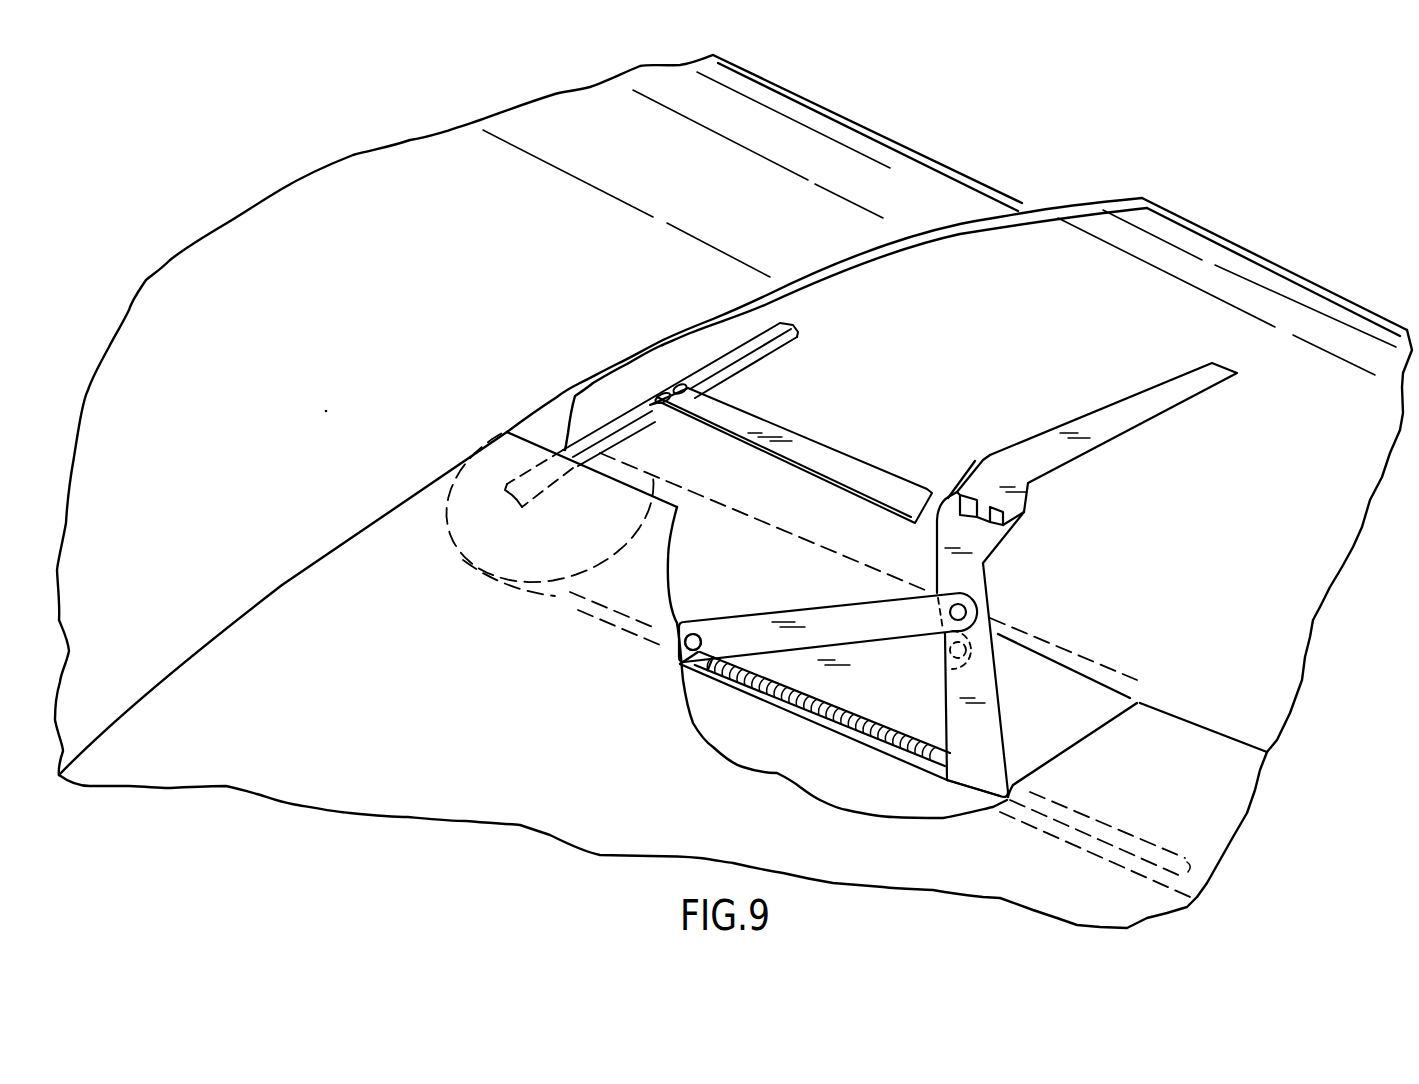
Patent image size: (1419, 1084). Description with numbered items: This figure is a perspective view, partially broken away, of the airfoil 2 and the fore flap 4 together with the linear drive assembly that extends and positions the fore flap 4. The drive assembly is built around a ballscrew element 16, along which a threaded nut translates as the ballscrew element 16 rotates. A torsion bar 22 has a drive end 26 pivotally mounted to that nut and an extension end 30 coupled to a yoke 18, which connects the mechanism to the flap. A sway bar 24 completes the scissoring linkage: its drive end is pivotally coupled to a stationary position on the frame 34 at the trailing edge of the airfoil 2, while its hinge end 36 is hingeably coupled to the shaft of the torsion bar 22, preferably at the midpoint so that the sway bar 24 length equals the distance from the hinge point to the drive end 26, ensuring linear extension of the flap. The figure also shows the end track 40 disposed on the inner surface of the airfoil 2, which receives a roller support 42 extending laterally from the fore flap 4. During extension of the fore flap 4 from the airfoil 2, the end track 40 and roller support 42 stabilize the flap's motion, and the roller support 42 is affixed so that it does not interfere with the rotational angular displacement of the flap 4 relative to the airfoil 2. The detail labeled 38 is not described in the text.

The airfoil 2 is at (590, 774).
The fore flap 4 is at (1028, 350).
The ballscrew element 16 is at (824, 718).
The yoke 18 is at (1143, 412).
The torsion bar 22 is at (983, 628).
The sway bar 24 is at (733, 625).
The drive end 26 is at (1003, 780).
The extension end 30 is at (978, 573).
The frame 34 is at (676, 656).
The hinge end 36 is at (920, 614).
The teeth 38 is at (1005, 521).
The end track 40 is at (772, 336).
The roller support 42 is at (804, 433).